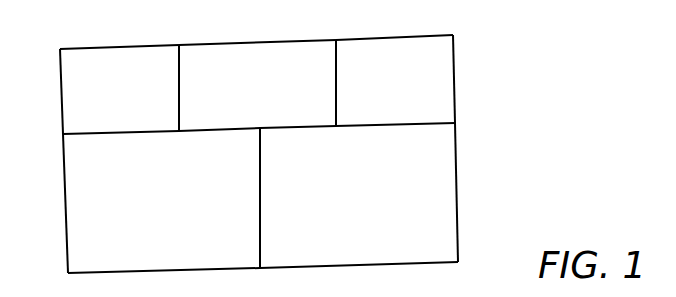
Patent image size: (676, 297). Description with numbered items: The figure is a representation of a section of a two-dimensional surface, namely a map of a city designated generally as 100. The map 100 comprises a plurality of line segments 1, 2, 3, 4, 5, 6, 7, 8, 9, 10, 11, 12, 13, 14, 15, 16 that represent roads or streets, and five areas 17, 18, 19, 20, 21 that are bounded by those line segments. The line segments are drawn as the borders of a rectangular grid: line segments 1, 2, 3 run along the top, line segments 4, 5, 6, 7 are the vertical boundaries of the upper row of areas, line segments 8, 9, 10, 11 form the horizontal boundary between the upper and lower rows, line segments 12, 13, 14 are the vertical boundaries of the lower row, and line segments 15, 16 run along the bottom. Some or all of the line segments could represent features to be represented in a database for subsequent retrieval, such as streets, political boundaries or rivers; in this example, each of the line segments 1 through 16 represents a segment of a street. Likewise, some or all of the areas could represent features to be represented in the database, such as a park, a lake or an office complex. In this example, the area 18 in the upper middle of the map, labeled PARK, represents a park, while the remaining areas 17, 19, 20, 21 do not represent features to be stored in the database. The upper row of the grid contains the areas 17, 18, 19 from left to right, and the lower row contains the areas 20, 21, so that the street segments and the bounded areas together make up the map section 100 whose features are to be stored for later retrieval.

The map of a city 100 is at (493, 122).
The line segment 1 is at (105, 48).
The line segment 2 is at (237, 43).
The line segment 3 is at (375, 38).
The line segment 4 is at (61, 107).
The line segment 5 is at (178, 108).
The line segment 6 is at (335, 100).
The line segment 7 is at (453, 95).
The line segment 8 is at (102, 135).
The line segment 9 is at (205, 131).
The line segment 10 is at (322, 130).
The line segment 11 is at (370, 127).
The line segment 12 is at (67, 222).
The line segment 13 is at (259, 218).
The line segment 14 is at (457, 202).
The line segment 15 is at (142, 271).
The line segment 16 is at (320, 266).
The area 17 is at (115, 109).
The area 18 is at (239, 106).
The area 19 is at (383, 103).
The area 20 is at (173, 205).
The area 21 is at (363, 201).